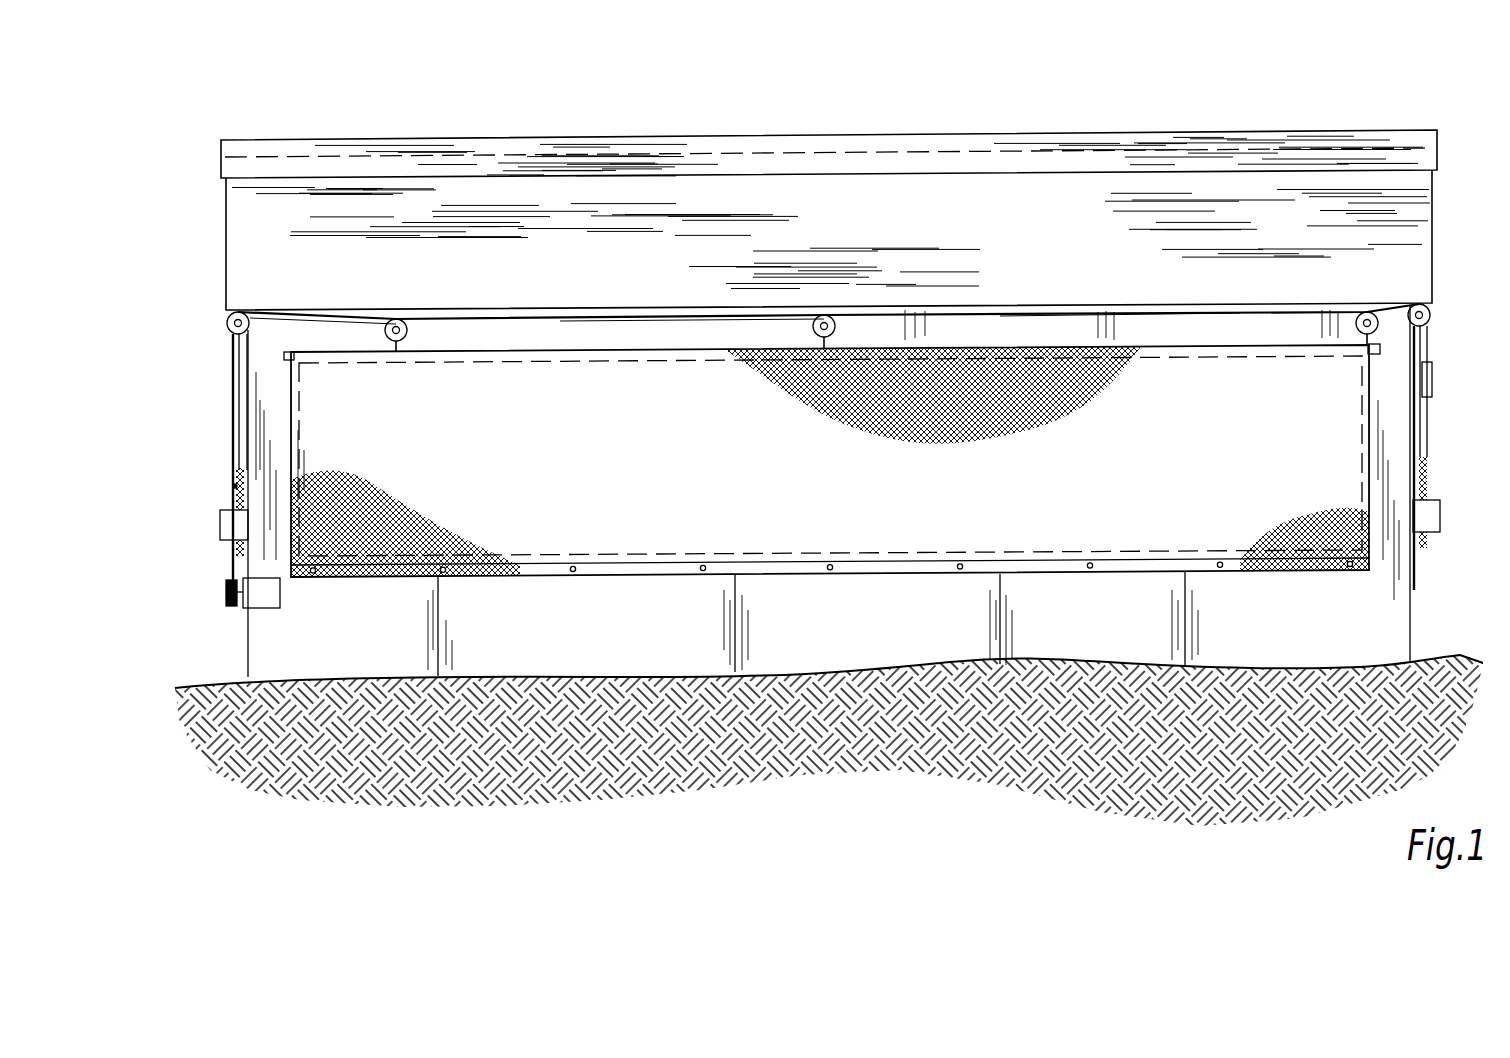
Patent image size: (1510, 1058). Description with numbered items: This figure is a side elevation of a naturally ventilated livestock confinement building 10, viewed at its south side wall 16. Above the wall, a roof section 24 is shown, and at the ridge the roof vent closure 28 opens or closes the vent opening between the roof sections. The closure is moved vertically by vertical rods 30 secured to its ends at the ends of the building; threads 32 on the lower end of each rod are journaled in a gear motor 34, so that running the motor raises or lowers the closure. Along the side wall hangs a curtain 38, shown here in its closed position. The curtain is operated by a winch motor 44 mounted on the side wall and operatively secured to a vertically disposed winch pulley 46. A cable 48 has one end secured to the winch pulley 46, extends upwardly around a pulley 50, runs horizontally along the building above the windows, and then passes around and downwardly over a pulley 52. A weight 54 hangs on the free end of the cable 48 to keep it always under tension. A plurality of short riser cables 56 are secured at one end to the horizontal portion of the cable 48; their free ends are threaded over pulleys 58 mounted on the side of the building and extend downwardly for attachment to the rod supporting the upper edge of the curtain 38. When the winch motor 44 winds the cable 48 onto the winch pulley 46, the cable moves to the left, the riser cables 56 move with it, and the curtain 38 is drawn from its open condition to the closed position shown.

The building 10 is at (1470, 60).
The south side wall 16 is at (850, 630).
The roof section 24 is at (247, 224).
The roof vent closure 28 is at (238, 138).
The vertical rod 30 is at (240, 433).
The threads 32 is at (235, 486).
The gear motor 34 is at (220, 522).
The curtain 38 is at (748, 482).
The winch motor 44 is at (265, 608).
The winch pulley 46 is at (226, 592).
The cable 48 is at (233, 405).
The pulley 50 is at (227, 323).
The pulley 52 is at (1431, 315).
The weight 54 is at (1432, 378).
The riser cable 56 is at (328, 322).
The pulley 58 is at (398, 318).